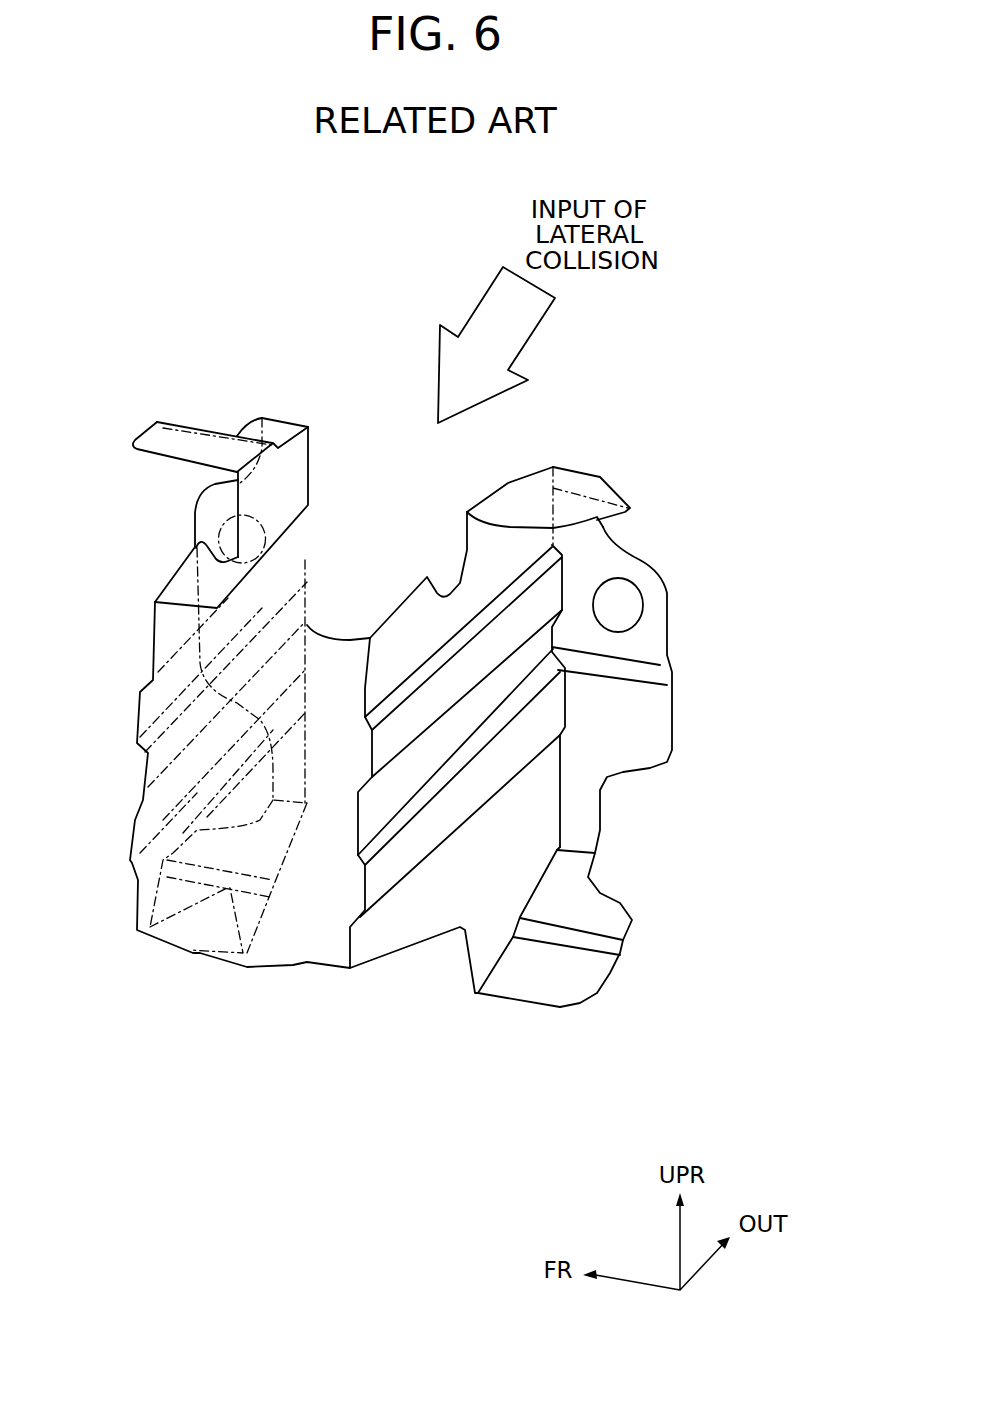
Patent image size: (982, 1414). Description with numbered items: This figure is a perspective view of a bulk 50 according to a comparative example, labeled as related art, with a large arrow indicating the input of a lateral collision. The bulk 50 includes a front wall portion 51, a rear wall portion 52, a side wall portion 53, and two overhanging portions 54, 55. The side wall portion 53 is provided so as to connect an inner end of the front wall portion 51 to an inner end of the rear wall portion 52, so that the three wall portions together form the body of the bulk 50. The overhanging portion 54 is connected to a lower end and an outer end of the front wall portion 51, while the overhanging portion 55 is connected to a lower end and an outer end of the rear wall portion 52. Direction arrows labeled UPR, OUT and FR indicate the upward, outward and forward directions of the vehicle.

The bulk 50 is at (197, 359).
The front wall portion 51 is at (283, 483).
The rear wall portion 52 is at (395, 917).
The side wall portion 53 is at (273, 937).
The overhanging portion 54 is at (212, 517).
The overhanging portion 55 is at (647, 718).